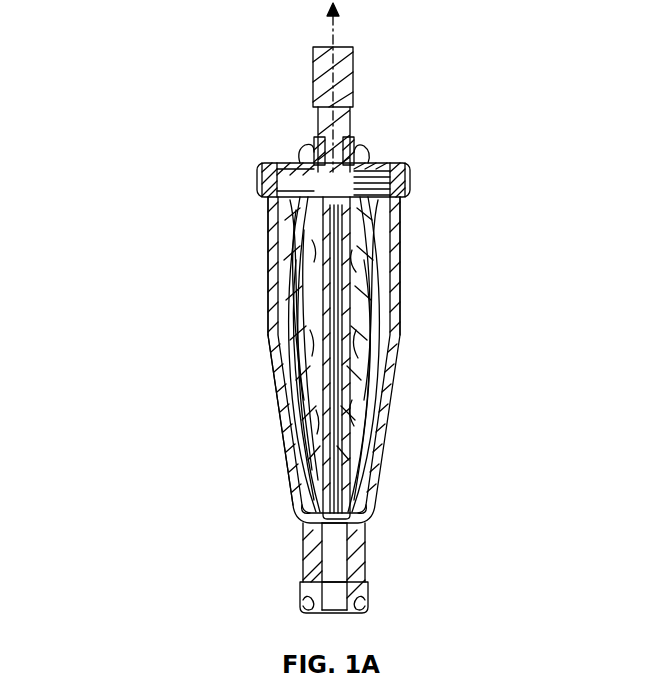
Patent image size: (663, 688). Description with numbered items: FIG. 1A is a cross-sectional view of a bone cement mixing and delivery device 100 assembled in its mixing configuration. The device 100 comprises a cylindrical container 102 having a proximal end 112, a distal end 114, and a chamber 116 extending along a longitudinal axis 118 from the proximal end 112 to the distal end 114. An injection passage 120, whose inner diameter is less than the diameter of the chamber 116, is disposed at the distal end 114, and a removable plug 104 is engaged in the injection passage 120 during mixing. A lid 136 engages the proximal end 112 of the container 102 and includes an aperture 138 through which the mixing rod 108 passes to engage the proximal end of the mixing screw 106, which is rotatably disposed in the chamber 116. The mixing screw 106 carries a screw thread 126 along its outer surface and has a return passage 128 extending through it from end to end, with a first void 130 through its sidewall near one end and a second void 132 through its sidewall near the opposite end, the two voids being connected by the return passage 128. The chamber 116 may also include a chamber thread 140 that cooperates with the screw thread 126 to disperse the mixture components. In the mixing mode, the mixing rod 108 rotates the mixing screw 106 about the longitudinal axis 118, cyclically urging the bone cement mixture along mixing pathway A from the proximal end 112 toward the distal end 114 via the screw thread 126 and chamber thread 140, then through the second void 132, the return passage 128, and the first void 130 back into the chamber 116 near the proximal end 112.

The bone cement mixing and delivery device 100 is at (148, 78).
The cylindrical container 102 is at (380, 463).
The plug 104 is at (371, 600).
The mixing screw 106 is at (308, 418).
The mixing rod 108 is at (356, 100).
The proximal end 112 is at (267, 215).
The distal end 114 is at (292, 463).
The chamber 116 is at (292, 290).
The longitudinal axis 118 is at (326, 32).
The injection passage 120 is at (296, 558).
The screw thread 126 is at (386, 282).
The return passage 128 is at (346, 372).
The first void 130 is at (318, 160).
The second void 132 is at (312, 512).
The lid 136 is at (414, 182).
The aperture 138 is at (357, 162).
The chamber thread 140 is at (398, 232).
The mixing pathway A is at (306, 330).